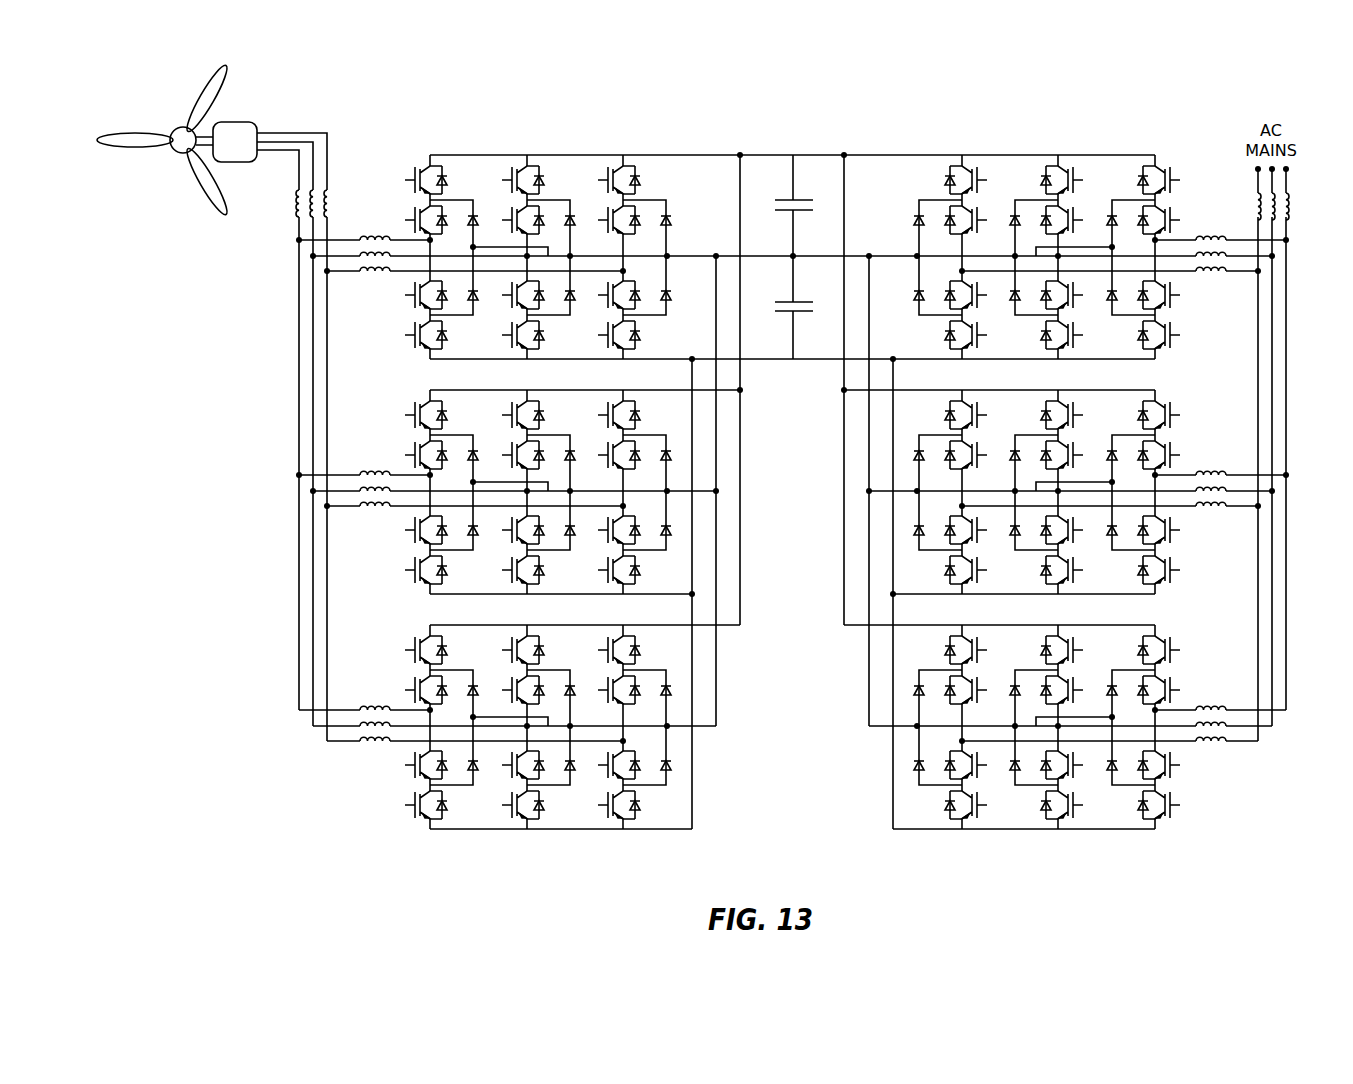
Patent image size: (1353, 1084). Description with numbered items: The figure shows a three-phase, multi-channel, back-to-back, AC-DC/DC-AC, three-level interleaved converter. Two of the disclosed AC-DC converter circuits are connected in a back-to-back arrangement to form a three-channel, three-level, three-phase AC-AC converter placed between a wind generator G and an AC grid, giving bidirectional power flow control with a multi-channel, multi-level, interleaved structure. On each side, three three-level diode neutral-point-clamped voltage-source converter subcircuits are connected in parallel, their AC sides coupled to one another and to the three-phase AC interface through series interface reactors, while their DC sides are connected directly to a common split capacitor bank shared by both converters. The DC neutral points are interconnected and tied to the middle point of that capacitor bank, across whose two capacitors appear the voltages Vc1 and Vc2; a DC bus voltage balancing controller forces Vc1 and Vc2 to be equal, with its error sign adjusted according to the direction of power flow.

The generator G is at (177, 140).
The split capacitor bank voltage Vc1 is at (779, 205).
The split capacitor bank voltage Vc2 is at (779, 307).